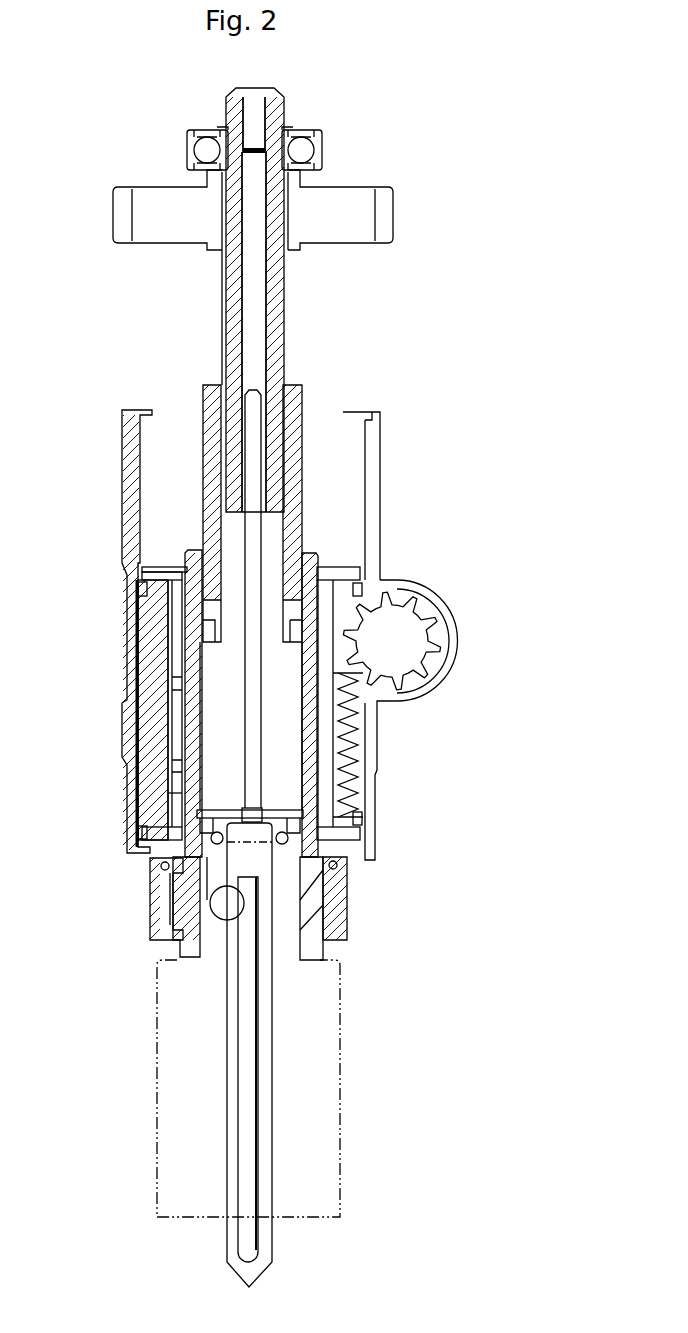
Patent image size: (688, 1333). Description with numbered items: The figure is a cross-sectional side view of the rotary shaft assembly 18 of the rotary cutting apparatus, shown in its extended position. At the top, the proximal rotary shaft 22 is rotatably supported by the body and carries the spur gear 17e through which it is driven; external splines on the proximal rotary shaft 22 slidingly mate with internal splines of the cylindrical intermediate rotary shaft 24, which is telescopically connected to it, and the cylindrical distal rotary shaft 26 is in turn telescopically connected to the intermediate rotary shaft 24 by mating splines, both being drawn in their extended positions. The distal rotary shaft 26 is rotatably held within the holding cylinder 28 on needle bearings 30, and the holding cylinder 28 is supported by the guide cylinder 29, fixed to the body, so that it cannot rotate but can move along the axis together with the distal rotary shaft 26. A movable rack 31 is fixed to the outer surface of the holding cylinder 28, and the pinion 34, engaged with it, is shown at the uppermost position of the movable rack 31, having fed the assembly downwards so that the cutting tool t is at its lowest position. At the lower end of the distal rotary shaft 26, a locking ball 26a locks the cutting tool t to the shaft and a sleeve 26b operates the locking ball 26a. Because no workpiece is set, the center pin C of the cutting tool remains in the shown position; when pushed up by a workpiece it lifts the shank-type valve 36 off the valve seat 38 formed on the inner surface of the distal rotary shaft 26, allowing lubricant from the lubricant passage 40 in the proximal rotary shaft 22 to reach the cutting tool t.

The spur gear 17e is at (122, 196).
The rotary shaft assembly 18 is at (87, 297).
The proximal rotary shaft 22 is at (218, 262).
The intermediate rotary shaft 24 is at (203, 385).
The distal rotary shaft 26 is at (188, 550).
The locking ball 26a is at (318, 938).
The sleeve 26b is at (152, 921).
The holding cylinder 28 is at (147, 612).
The guide cylinder 29 is at (130, 527).
The needle bearings 30 is at (178, 635).
The movable rack 31 is at (347, 773).
The pinion 34 is at (398, 650).
The shank-type valve 36 is at (252, 557).
The valve seat 38 is at (170, 793).
The lubricant passage 40 is at (257, 202).
The center pin C is at (227, 1123).
The cutting tool t is at (340, 1103).